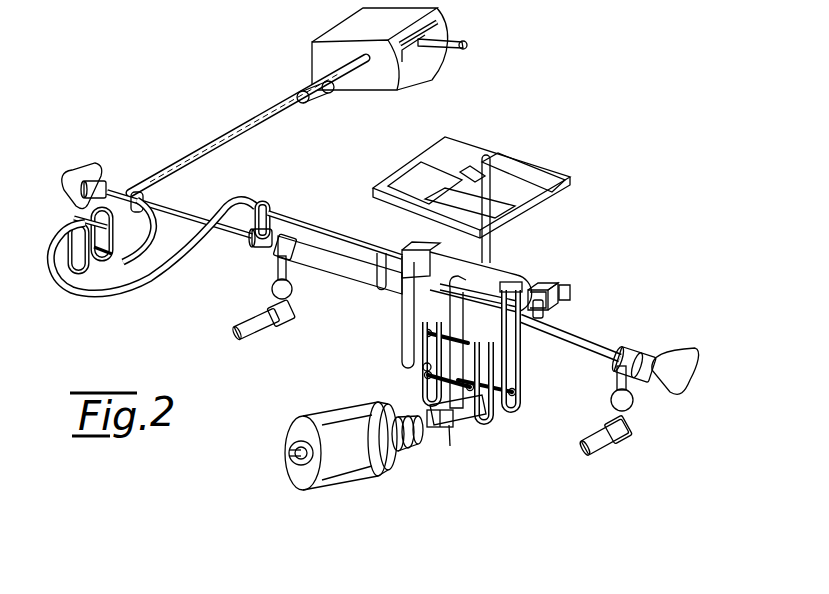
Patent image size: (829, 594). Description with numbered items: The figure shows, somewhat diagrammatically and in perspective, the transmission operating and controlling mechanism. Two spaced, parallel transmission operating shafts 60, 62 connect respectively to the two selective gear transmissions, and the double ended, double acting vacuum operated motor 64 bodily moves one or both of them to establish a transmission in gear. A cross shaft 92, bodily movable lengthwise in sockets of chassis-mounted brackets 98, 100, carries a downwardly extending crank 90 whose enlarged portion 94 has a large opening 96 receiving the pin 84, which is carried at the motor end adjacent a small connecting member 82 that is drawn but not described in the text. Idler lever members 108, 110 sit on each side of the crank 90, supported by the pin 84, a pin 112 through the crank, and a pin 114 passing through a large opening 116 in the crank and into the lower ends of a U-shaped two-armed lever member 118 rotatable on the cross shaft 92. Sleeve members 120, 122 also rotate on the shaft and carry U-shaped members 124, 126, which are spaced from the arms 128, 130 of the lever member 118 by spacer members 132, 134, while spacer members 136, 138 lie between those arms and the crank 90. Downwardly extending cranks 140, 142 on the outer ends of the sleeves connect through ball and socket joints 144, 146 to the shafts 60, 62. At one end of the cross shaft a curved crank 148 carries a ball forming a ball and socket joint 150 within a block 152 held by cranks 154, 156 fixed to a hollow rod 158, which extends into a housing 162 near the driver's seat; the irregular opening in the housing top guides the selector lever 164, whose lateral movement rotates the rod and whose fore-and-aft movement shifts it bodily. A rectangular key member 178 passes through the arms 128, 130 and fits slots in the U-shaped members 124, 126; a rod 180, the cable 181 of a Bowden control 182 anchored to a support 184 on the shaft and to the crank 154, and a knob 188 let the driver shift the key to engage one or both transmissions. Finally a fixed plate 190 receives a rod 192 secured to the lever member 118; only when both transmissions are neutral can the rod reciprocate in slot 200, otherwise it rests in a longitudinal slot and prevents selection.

The transmission operating shaft 60 is at (252, 340).
The transmission operating shaft 62 is at (592, 457).
The vacuum operated motor 64 is at (360, 483).
The coupling block 82 is at (443, 428).
The pin 84 is at (473, 418).
The crank 90 is at (470, 298).
The cross shaft 92 is at (173, 206).
The enlarged portion 94 is at (450, 447).
The opening 96 is at (445, 432).
The bracket 98 is at (697, 358).
The bracket 100 is at (80, 178).
The idler lever member 108 is at (423, 368).
The idler lever member 110 is at (490, 412).
The pin 112 is at (424, 357).
The pin 114 is at (498, 383).
The opening 116 is at (427, 380).
The U-shaped two-armed lever member 118 is at (540, 270).
The sleeve member 120 is at (339, 275).
The sleeve member 122 is at (582, 352).
The U-shaped member 124 is at (378, 297).
The U-shaped member 126 is at (558, 300).
The arm 128 is at (400, 340).
The arm 130 is at (514, 392).
The spacer member 132 is at (406, 296).
The spacer member 134 is at (518, 347).
The spacer member 136 is at (440, 260).
The spacer member 138 is at (532, 283).
The crank 140 is at (272, 289).
The crank 142 is at (631, 402).
The ball and socket joint 144 is at (292, 325).
The ball and socket joint 146 is at (629, 432).
The curved crank 148 is at (140, 238).
The ball and socket joint 150 is at (98, 260).
The block 152 is at (74, 226).
The crank 154 is at (76, 240).
The crank 156 is at (112, 240).
The hollow rod 158 is at (178, 167).
The housing 162 is at (338, 26).
The selector lever 164 is at (468, 42).
The key member 178 is at (569, 280).
The rod 180 is at (312, 224).
The cable 181 is at (250, 202).
The Bowden control 182 is at (168, 270).
The support 184 is at (250, 242).
The knob 188 is at (310, 104).
The plate 190 is at (517, 167).
The rod 192 is at (494, 234).
The slot 200 is at (462, 183).